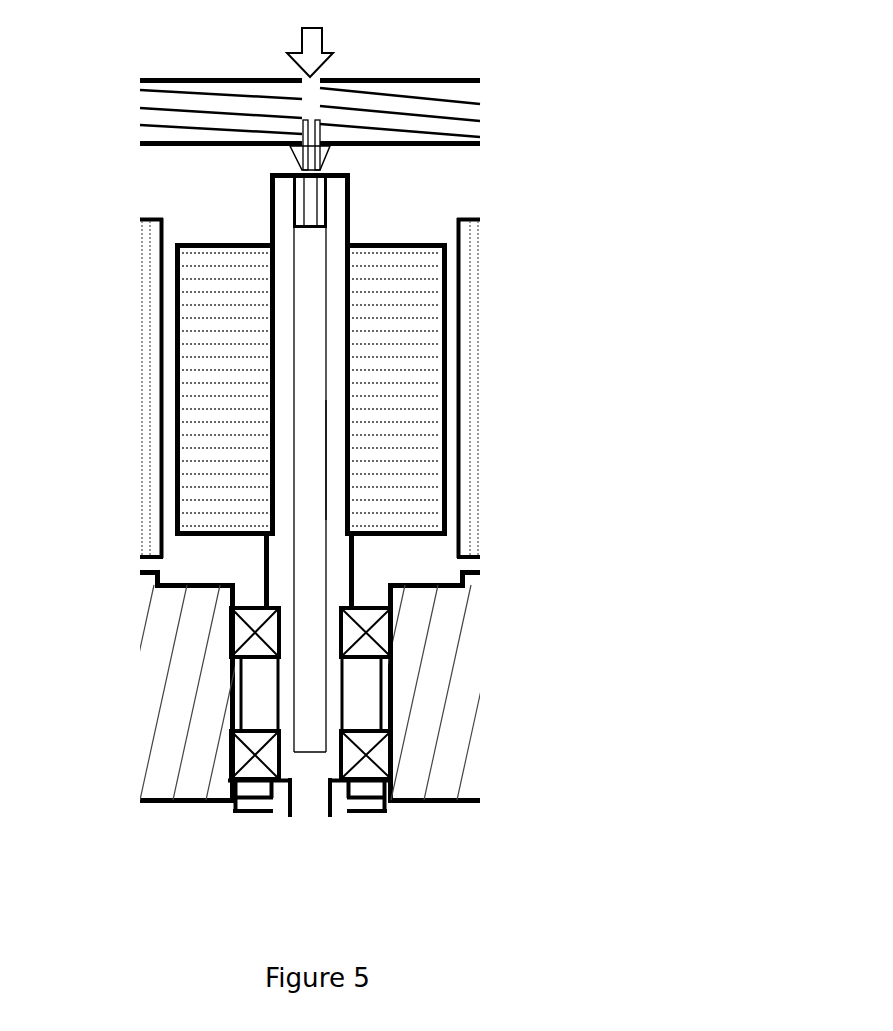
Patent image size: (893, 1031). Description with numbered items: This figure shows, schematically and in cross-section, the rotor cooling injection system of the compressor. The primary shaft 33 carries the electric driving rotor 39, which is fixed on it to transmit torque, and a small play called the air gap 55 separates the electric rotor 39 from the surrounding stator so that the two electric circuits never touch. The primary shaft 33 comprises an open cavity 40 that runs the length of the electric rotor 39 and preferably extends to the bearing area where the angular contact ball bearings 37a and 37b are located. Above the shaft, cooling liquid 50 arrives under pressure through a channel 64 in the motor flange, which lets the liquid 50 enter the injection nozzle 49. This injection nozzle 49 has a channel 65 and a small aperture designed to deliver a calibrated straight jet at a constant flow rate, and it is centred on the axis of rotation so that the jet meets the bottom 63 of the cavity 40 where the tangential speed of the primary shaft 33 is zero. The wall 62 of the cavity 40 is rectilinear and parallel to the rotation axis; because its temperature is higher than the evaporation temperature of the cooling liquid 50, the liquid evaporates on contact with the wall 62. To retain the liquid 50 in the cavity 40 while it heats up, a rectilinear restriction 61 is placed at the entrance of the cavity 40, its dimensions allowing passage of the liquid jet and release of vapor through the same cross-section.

The cooling liquid 50 is at (312, 42).
The channel 64 is at (307, 98).
The injection nozzle 49 is at (325, 125).
The channel 65 is at (307, 163).
The primary shaft 33 is at (285, 200).
The restriction 61 is at (327, 208).
The air gap 55 is at (165, 327).
The electric driving rotor 39 is at (388, 362).
The open cavity 40 is at (303, 452).
The wall 62 is at (325, 460).
The ball bearing 37b is at (382, 632).
The ball bearing 37a is at (382, 755).
The bottom 63 is at (310, 752).